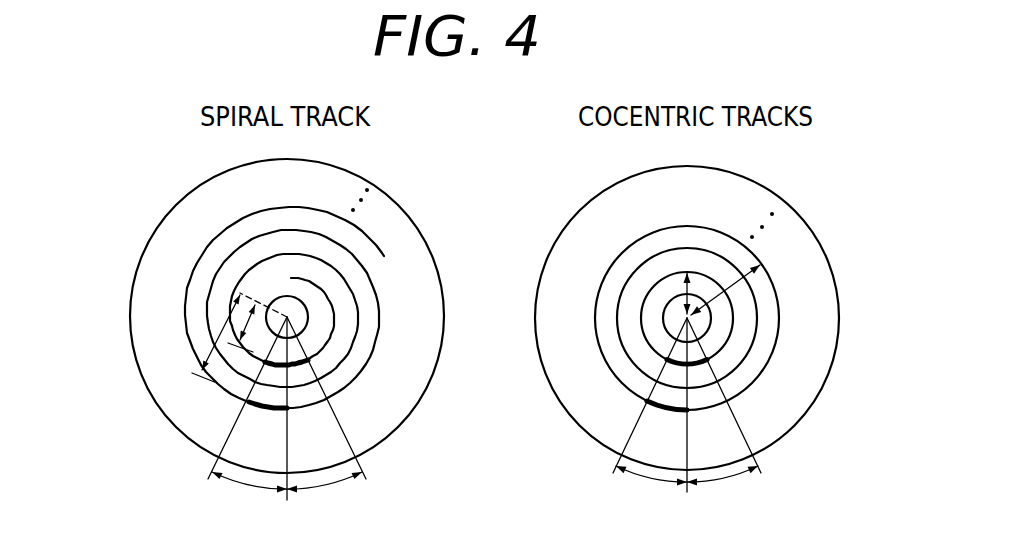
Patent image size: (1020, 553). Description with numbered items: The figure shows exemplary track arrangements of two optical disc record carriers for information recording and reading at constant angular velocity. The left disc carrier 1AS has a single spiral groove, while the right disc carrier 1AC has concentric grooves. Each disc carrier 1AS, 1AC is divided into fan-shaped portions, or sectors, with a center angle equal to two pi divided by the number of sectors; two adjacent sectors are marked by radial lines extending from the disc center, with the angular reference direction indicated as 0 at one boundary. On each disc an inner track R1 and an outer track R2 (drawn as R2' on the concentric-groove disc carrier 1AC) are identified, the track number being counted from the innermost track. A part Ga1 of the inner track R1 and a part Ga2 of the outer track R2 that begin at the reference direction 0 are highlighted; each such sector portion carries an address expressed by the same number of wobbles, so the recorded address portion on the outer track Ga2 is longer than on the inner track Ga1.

The optical disc record carrier with spiral groove 1AS is at (145, 257).
The optical disc record carrier with concentric grooves 1AC is at (553, 245).
The inner track R1 is at (229, 318).
The outer track R2 is at (197, 328).
The outer track of concentric disc R2' is at (792, 295).
The part of inner track Ga1 is at (669, 361).
The part of outer track Ga2 is at (260, 410).
The reference direction 0 is at (436, 406).